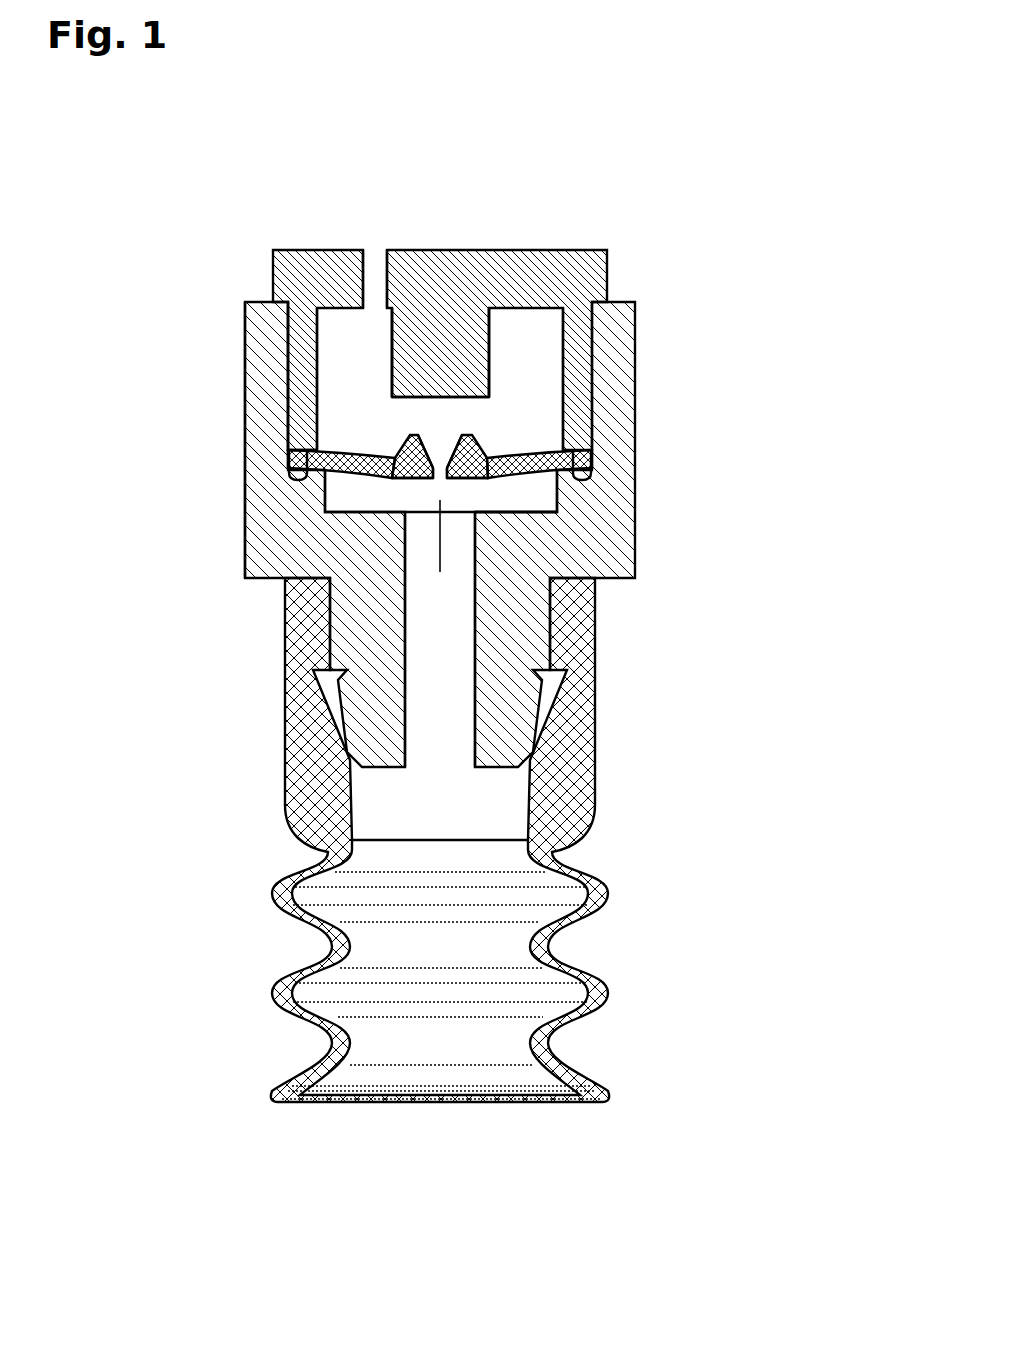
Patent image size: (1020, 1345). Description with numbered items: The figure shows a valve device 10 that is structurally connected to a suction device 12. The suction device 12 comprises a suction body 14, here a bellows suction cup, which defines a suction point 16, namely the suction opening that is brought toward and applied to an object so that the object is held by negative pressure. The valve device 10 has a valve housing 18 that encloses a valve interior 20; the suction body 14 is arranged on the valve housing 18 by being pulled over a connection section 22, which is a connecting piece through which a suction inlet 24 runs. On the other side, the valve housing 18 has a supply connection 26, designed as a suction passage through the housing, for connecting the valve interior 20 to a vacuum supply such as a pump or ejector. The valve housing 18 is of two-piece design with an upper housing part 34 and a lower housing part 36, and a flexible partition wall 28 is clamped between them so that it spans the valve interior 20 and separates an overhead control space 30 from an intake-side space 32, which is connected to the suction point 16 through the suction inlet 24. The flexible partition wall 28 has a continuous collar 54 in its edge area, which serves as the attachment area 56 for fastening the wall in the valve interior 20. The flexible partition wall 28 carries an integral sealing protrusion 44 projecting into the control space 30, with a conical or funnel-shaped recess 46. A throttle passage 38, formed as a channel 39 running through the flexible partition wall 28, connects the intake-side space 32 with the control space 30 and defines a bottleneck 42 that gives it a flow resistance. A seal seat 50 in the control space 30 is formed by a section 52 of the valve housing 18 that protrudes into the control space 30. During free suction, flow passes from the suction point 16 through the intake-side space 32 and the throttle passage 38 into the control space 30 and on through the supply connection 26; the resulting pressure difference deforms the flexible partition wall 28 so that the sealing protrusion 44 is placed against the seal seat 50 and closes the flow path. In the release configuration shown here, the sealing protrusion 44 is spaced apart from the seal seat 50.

The valve device 10 is at (722, 344).
The suction device 12 is at (652, 1028).
The suction body 14 is at (608, 893).
The suction point 16 is at (384, 1115).
The valve housing 18 is at (256, 289).
The valve interior 20 is at (340, 327).
The connection section 22 is at (373, 712).
The suction inlet 24 is at (438, 740).
The supply connection 26 is at (357, 282).
The flexible partition wall 28 is at (338, 474).
The control space 30 is at (528, 333).
The intake-side space 32 is at (545, 494).
The upper housing part 34 is at (300, 337).
The lower housing part 36 is at (272, 435).
The throttle passage 38 is at (440, 495).
The channel 39 is at (444, 575).
The bottleneck 42 is at (480, 478).
The sealing protrusion 44 is at (392, 448).
The recess 46 is at (440, 438).
The seal seat 50 is at (420, 415).
The section 52 is at (428, 337).
The collar 54 is at (593, 467).
The attachment area 56 is at (288, 473).